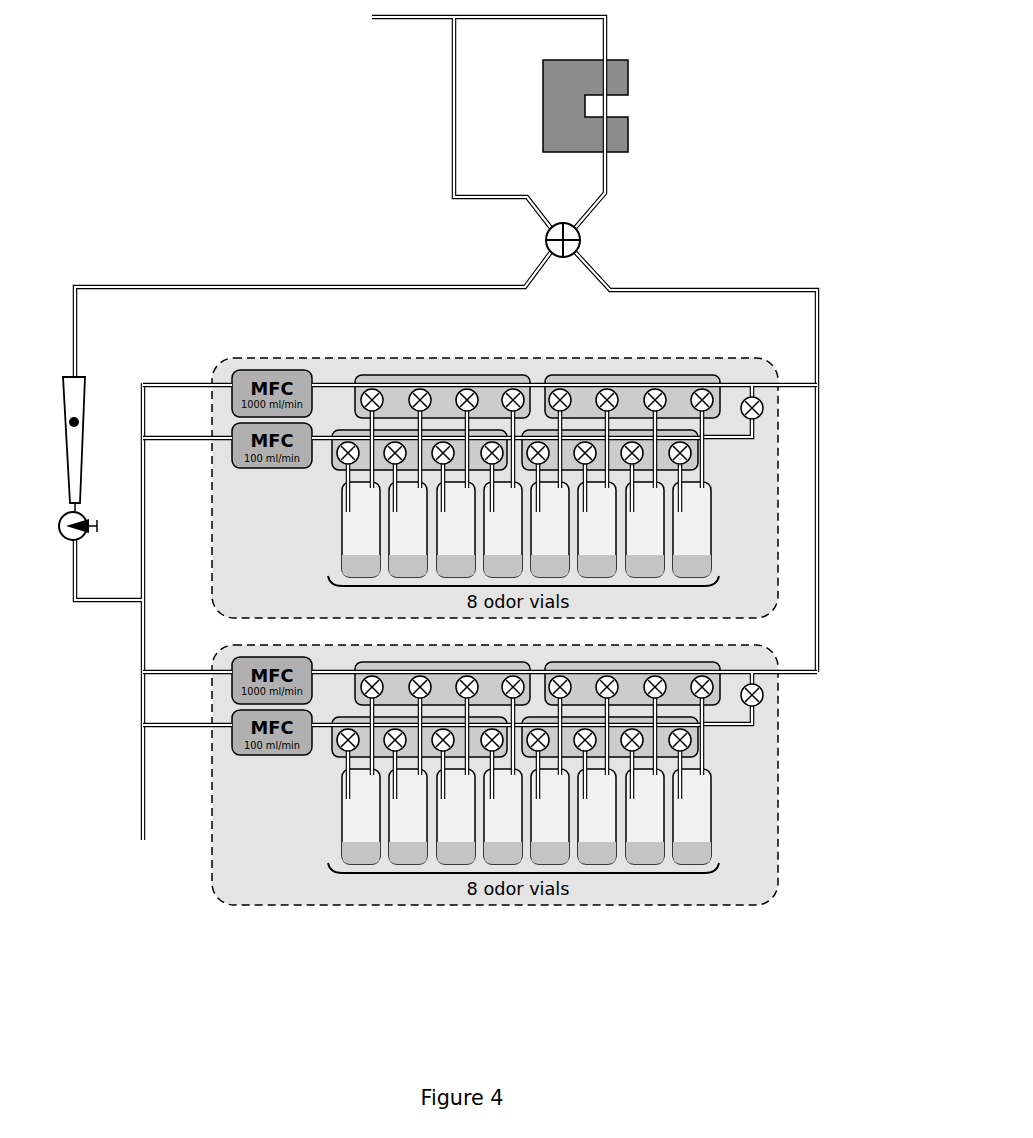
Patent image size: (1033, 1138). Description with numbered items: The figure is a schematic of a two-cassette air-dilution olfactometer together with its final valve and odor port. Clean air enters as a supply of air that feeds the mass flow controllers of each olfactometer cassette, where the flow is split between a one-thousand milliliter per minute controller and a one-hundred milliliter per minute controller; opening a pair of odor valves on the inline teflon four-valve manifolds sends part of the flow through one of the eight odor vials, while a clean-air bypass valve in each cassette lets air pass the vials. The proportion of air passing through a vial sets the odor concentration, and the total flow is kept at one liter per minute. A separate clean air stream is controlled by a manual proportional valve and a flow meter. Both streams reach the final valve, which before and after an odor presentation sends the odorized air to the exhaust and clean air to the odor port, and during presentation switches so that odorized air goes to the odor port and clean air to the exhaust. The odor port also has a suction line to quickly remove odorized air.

The element odor port is at (648, 79).
The element final valve is at (597, 230).
The exhaust line exhaust is at (437, 33).
The element flow meter is at (48, 455).
The element air is at (133, 830).
The element bypass valve is at (775, 699).